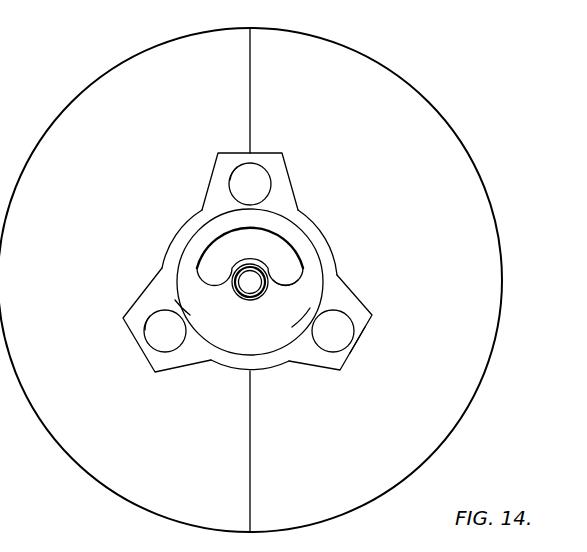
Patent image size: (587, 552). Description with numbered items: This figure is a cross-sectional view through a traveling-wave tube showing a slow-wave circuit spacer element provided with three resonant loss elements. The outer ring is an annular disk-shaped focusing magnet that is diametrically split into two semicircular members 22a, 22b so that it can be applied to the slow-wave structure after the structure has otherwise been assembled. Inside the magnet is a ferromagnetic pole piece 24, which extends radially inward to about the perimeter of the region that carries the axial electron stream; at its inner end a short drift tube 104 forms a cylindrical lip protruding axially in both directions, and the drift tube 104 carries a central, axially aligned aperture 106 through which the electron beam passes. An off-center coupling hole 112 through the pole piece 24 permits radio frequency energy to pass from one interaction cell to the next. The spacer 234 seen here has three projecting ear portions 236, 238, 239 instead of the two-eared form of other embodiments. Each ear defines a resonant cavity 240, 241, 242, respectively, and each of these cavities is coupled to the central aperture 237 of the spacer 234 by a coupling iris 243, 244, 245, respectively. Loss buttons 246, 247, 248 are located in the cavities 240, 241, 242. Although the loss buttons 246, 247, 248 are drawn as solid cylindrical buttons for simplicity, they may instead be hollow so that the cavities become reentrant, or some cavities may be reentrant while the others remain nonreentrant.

The semicircular member 22a is at (398, 76).
The semicircular member 22b is at (88, 88).
The ferromagnetic pole piece 24 is at (233, 261).
The drift tube 104 is at (240, 299).
The aperture 106 is at (252, 298).
The coupling hole 112 is at (284, 286).
The spacer 234 is at (323, 230).
The projecting ear portion 236 is at (289, 170).
The central aperture 237 is at (320, 258).
The projecting ear portion 238 is at (360, 301).
The projecting ear portion 239 is at (127, 320).
The resonant cavity 240 is at (258, 163).
The resonant cavity 241 is at (355, 343).
The resonant cavity 242 is at (175, 353).
The coupling iris 243 is at (260, 205).
The coupling iris 244 is at (302, 316).
The coupling iris 245 is at (182, 307).
The loss button 246 is at (236, 167).
The loss button 247 is at (335, 343).
The loss button 248 is at (150, 318).